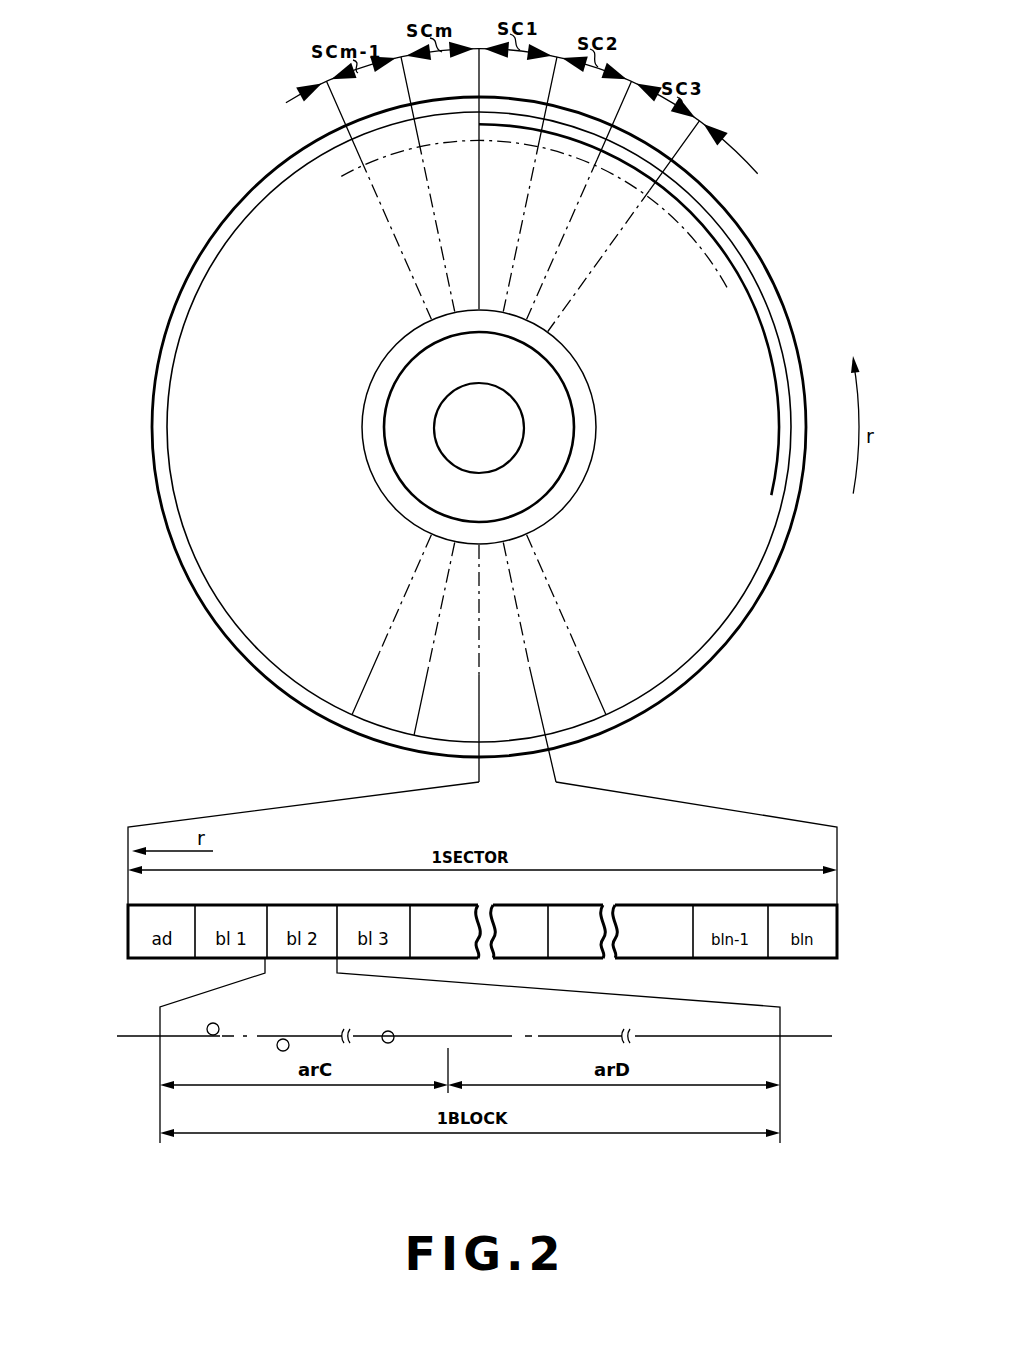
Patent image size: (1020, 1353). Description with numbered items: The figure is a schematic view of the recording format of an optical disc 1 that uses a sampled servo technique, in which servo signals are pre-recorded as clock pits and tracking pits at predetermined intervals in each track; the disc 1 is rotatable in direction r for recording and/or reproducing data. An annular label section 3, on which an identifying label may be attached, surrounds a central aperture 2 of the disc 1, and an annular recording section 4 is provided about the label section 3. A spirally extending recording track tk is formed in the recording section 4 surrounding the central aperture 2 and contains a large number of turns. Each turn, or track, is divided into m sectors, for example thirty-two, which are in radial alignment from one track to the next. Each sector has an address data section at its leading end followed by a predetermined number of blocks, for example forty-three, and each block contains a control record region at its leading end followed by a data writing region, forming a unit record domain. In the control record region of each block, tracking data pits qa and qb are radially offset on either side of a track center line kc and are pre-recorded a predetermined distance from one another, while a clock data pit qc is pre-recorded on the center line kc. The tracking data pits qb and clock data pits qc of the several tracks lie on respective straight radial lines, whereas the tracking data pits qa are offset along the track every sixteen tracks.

The optical disc 1 is at (714, 669).
The central aperture 2 is at (440, 437).
The label section 3 is at (395, 420).
The recording section 4 is at (730, 602).
The recording track tk is at (757, 313).
The track center line kc is at (457, 1036).
The tracking data pit qa is at (219, 1027).
The tracking data pit qb is at (285, 1039).
The clock data pit qc is at (394, 1034).